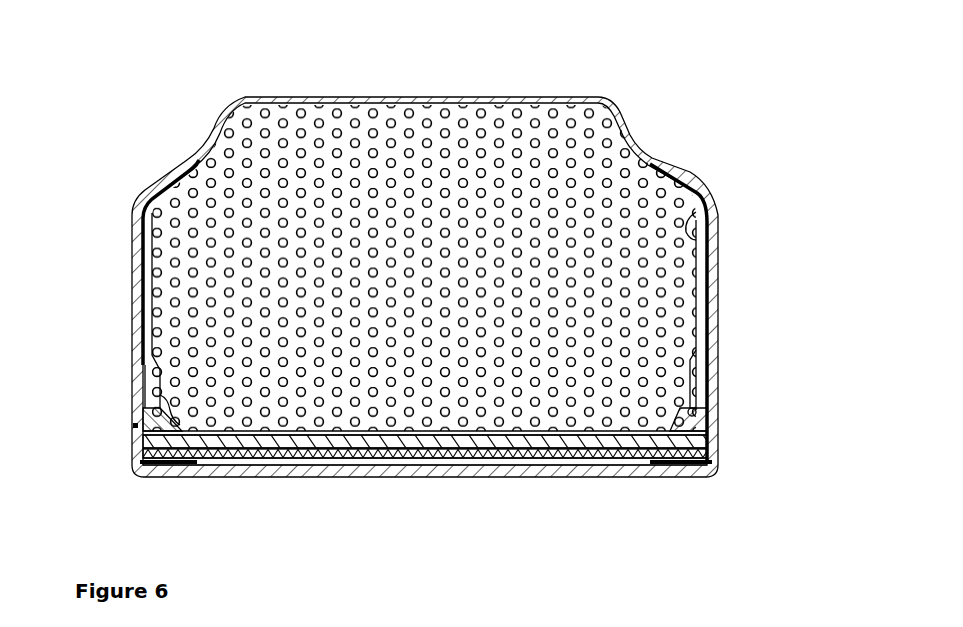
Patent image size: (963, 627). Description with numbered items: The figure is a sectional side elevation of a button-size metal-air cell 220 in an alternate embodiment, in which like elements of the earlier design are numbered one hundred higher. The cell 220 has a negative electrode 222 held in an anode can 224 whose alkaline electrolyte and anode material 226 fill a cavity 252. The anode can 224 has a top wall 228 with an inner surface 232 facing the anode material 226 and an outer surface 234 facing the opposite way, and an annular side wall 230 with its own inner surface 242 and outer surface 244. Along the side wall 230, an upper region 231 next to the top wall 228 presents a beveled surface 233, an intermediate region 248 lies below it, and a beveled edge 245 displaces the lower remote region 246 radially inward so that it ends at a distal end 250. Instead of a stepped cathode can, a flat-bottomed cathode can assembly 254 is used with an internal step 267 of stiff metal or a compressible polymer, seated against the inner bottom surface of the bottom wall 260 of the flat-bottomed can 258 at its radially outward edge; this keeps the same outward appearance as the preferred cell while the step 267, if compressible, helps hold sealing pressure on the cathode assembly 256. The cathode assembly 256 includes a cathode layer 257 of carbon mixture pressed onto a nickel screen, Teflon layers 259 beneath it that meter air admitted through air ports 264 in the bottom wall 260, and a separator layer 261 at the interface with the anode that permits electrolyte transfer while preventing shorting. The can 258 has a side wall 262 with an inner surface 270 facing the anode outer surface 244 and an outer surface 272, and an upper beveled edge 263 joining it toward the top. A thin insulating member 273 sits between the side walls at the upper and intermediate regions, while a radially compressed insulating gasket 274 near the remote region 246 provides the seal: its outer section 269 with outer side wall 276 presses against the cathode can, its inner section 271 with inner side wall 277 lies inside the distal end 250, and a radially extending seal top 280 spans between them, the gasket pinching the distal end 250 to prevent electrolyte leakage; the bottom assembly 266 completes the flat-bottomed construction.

The cell 220 is at (760, 209).
The negative electrode 222 is at (266, 91).
The anode can 224 is at (333, 95).
The anode material 226 is at (462, 140).
The top wall 228 is at (287, 97).
The side wall 230 is at (698, 214).
The upper region 231 is at (640, 150).
The inner surface 232 is at (552, 100).
The beveled surface 233 is at (618, 104).
The outer surface 234 is at (512, 97).
The inner surface 242 is at (695, 313).
The outer surface 244 is at (718, 288).
The beveled edge 245 is at (700, 373).
The remote region 246 is at (702, 380).
The intermediate region 248 is at (712, 252).
The distal end 250 is at (697, 410).
The cavity 252 is at (405, 100).
The cathode can assembly 254 is at (396, 478).
The cathode assembly 256 is at (322, 458).
The cathode layer 257 is at (502, 450).
The flat-bottomed can 258 is at (252, 478).
The Teflon layers 259 is at (371, 456).
The bottom wall 260 is at (207, 480).
The separator layer 261 is at (302, 440).
The side wall 262 is at (132, 312).
The upper beveled edge 263 is at (175, 170).
The air ports 264 is at (547, 478).
The bottom assembly 266 is at (472, 463).
The internal step 267 is at (713, 467).
The outer section 269 is at (135, 388).
The inner surface 270 is at (132, 280).
The inner section 271 is at (135, 445).
The outer surface 272 is at (132, 237).
The insulating member 273 is at (197, 157).
The insulating gasket 274 is at (135, 420).
The outer side wall 276 is at (135, 430).
The inner side wall 277 is at (157, 463).
The seal top 280 is at (145, 373).